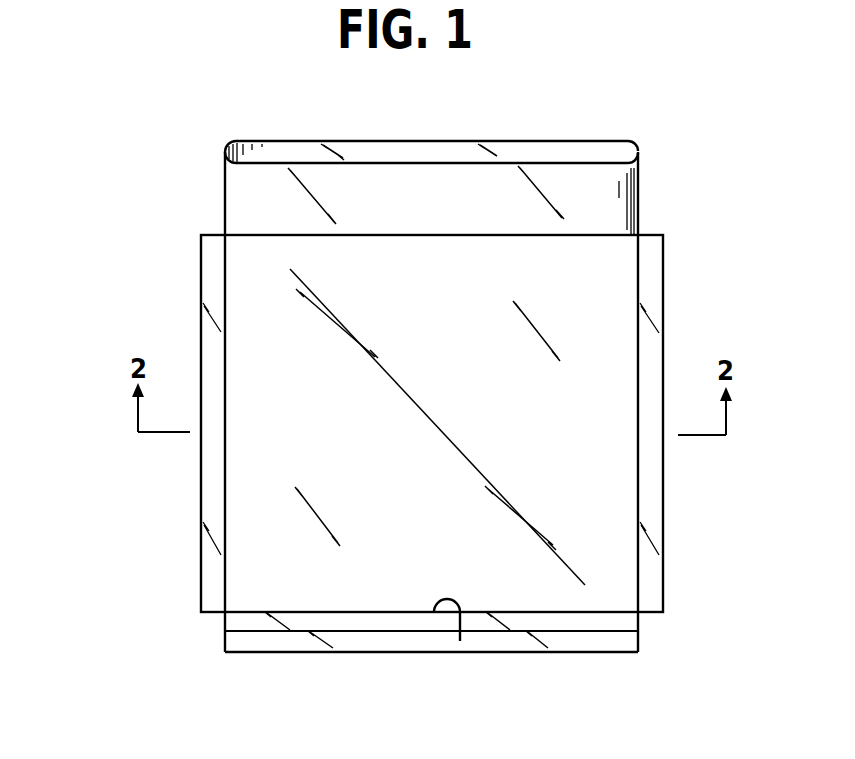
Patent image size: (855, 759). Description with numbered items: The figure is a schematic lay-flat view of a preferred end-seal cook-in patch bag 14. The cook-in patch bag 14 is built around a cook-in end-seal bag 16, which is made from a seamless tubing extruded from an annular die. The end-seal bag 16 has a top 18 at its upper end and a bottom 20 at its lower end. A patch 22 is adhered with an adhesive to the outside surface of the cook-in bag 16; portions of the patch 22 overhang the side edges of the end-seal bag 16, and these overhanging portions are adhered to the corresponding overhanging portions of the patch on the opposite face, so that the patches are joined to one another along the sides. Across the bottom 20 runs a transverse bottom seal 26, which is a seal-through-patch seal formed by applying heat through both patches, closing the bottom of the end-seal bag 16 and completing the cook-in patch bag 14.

The cook-in patch bag 14 is at (154, 288).
The cook-in end-seal bag 16 is at (620, 203).
The top 18 is at (562, 141).
The bottom 20 is at (560, 652).
The patch 22 is at (653, 292).
The transverse bottom seal 26 is at (460, 640).